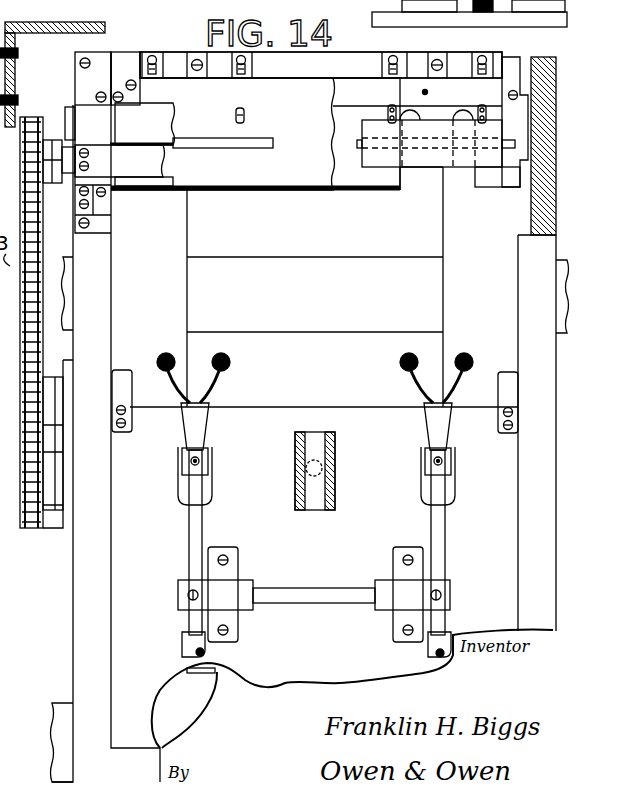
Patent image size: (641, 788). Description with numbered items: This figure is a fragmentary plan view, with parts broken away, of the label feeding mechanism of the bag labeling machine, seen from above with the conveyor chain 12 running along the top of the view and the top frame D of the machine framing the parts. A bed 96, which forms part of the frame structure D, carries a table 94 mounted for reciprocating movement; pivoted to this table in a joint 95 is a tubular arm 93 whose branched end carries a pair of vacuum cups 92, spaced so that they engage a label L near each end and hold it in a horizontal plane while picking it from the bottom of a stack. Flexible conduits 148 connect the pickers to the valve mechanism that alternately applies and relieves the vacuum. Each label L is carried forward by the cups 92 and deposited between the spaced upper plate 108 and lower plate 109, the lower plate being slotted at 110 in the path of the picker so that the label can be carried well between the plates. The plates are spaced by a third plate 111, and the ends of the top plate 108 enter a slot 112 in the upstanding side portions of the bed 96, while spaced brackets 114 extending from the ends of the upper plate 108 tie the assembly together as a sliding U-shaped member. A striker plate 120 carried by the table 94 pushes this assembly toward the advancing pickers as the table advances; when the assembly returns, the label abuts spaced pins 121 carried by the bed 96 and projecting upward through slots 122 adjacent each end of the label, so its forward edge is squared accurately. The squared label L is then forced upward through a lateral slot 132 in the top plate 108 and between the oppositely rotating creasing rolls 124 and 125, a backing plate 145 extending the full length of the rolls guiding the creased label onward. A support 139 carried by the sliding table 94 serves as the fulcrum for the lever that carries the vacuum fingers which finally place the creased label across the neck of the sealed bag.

The conveyor chain 12 is at (487, 12).
The vacuum cups 92 is at (233, 365).
The tubular arm 93 is at (193, 533).
The table 94 is at (122, 565).
The joint 95 is at (220, 592).
The bed 96 is at (85, 628).
The upper plate 108 is at (302, 173).
The lower plate 109 is at (357, 170).
The slot 110 is at (422, 173).
The third plate 111 is at (357, 82).
The slot 112 is at (525, 192).
The brackets 114 is at (134, 60).
The striker plate 120 is at (125, 375).
The pins 121 is at (245, 115).
The slots 122 is at (402, 100).
The creasing roll 124 is at (152, 100).
The creasing roll 125 is at (167, 180).
The lateral slot 132 is at (248, 142).
The support 139 is at (337, 478).
The backing plate 145 is at (138, 160).
The flexible conduits 148 is at (188, 638).
The top frame D is at (59, 22).
The labels L is at (458, 157).